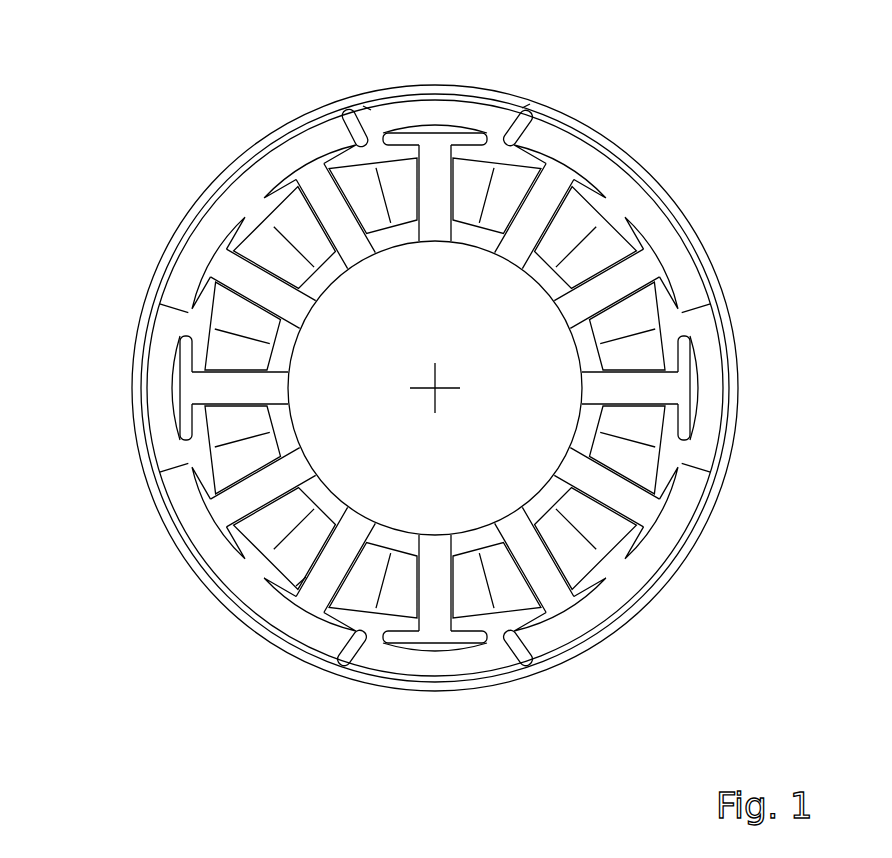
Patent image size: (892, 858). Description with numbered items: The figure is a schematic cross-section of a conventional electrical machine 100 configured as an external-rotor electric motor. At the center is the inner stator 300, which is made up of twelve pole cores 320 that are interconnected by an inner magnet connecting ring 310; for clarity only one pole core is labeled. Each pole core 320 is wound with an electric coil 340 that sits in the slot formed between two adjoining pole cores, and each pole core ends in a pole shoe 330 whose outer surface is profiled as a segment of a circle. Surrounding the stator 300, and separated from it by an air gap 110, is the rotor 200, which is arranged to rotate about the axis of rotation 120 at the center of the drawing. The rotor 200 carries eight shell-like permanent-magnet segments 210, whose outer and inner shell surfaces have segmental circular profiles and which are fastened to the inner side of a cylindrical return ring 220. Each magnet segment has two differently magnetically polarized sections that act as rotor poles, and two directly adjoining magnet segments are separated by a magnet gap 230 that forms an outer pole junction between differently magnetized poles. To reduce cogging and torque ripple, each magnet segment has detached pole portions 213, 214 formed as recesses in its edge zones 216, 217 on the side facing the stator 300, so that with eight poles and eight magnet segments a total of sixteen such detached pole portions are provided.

The electrical machine 100 is at (213, 76).
The air gap 110 is at (479, 118).
The axis of rotation 120 is at (447, 378).
The rotor 200 is at (585, 678).
The magnet segments 210 is at (433, 395).
The detached pole portion 213 is at (357, 122).
The detached pole portion 214 is at (515, 119).
The edge zone 216 is at (367, 108).
The edge zone 217 is at (524, 110).
The return ring 220 is at (549, 675).
The magnet gap 230 is at (592, 126).
The stator 300 is at (484, 504).
The magnet connecting ring 310 is at (576, 433).
The pole core 320 is at (343, 554).
The pole shoe 330 is at (344, 660).
The electric coil 340 is at (299, 584).